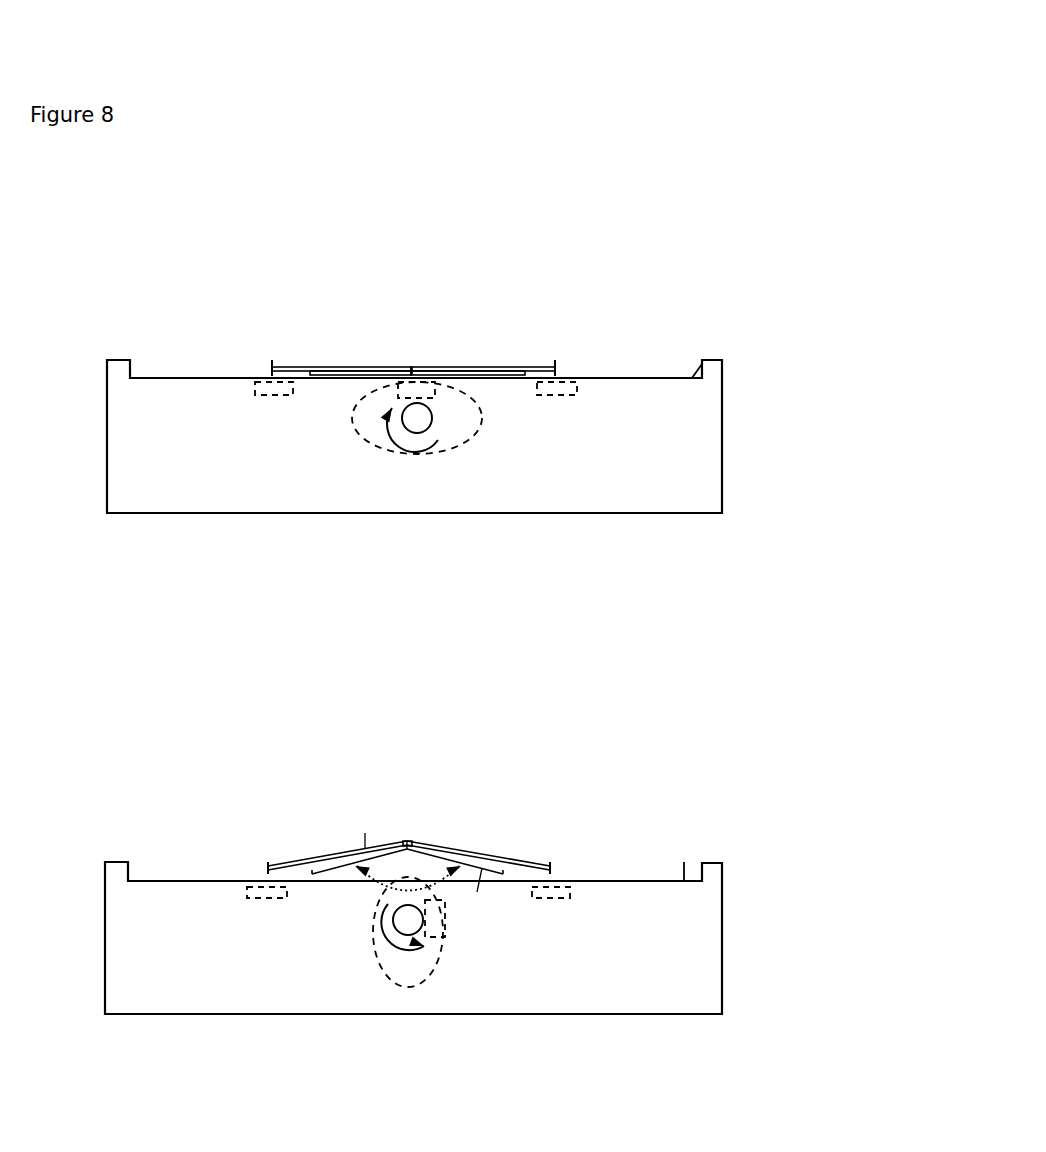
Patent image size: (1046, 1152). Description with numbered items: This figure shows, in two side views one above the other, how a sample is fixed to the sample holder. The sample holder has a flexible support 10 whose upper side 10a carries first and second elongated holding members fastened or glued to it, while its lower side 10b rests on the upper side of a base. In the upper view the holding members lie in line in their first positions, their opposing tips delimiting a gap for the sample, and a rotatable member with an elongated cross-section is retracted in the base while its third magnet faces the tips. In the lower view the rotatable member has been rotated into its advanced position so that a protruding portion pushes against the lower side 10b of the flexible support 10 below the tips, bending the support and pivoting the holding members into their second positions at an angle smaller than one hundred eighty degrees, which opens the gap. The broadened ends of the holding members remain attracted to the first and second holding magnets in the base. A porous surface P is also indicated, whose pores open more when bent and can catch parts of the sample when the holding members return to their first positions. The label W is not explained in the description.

The flexible support 10 is at (406, 800).
The upper side of the flexible support 10a is at (360, 848).
The lower side of the flexible support 10b is at (485, 870).
The porous surface P is at (405, 845).
The bonding width W is at (447, 882).